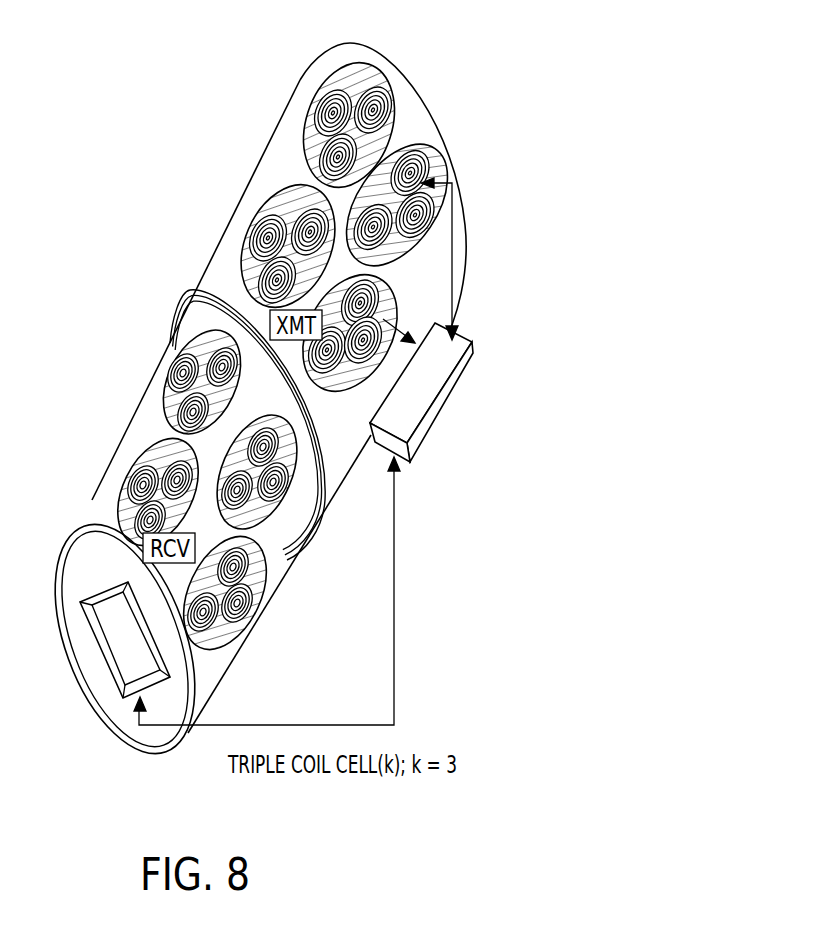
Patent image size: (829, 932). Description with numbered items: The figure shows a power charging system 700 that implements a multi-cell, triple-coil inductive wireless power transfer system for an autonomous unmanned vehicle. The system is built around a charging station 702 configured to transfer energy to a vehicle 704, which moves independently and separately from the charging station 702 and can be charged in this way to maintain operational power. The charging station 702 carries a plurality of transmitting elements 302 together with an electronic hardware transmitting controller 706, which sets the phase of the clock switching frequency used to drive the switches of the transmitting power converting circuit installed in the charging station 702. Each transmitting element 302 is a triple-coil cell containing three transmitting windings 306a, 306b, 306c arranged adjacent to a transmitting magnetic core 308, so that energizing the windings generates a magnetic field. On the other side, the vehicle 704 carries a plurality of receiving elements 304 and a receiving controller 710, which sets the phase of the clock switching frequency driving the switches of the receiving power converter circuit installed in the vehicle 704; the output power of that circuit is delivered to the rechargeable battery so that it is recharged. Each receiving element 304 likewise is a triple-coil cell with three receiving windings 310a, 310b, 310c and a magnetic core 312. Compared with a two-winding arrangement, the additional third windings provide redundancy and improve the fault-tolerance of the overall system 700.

The power charging system 700 is at (165, 113).
The charging station 702 is at (306, 76).
The vehicle 704 is at (97, 494).
The transmitting controller 706 is at (425, 428).
The receiving controller 710 is at (123, 658).
The transmitting element 302 is at (316, 106).
The receiving element 304 is at (156, 348).
The transmitting winding 306a is at (314, 122).
The transmitting winding 306b is at (328, 92).
The transmitting winding 306c is at (388, 88).
The transmitting magnetic core 308 is at (312, 155).
The receiving winding 310a is at (213, 332).
The receiving winding 310b is at (173, 355).
The receiving winding 310c is at (180, 410).
The magnetic core 312 is at (172, 395).